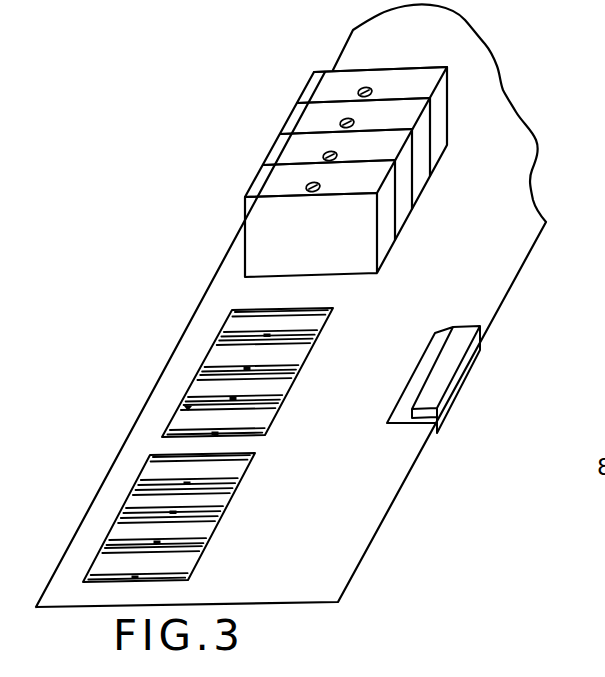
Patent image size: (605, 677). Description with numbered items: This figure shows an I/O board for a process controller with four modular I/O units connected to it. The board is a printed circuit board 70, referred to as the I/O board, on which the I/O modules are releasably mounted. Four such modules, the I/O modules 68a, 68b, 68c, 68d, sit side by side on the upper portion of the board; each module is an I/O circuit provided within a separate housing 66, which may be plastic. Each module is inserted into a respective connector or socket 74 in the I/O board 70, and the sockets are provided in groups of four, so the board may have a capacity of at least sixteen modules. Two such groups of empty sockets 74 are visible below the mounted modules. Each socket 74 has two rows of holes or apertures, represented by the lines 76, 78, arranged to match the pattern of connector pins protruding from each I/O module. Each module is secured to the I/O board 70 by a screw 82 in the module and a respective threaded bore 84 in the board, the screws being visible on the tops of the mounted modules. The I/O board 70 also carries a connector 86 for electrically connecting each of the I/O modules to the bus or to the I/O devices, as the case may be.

The housing 66 is at (258, 222).
The I/O module 68a is at (309, 83).
The I/O module 68b is at (292, 114).
The I/O module 68c is at (276, 143).
The I/O module 68d is at (256, 178).
The printed circuit board 70 is at (527, 95).
The socket 74 is at (337, 320).
The row of holes 76 is at (237, 310).
The row of holes 78 is at (225, 328).
The screw 82 is at (372, 90).
The threaded bore 84 is at (218, 436).
The connector 86 is at (458, 378).